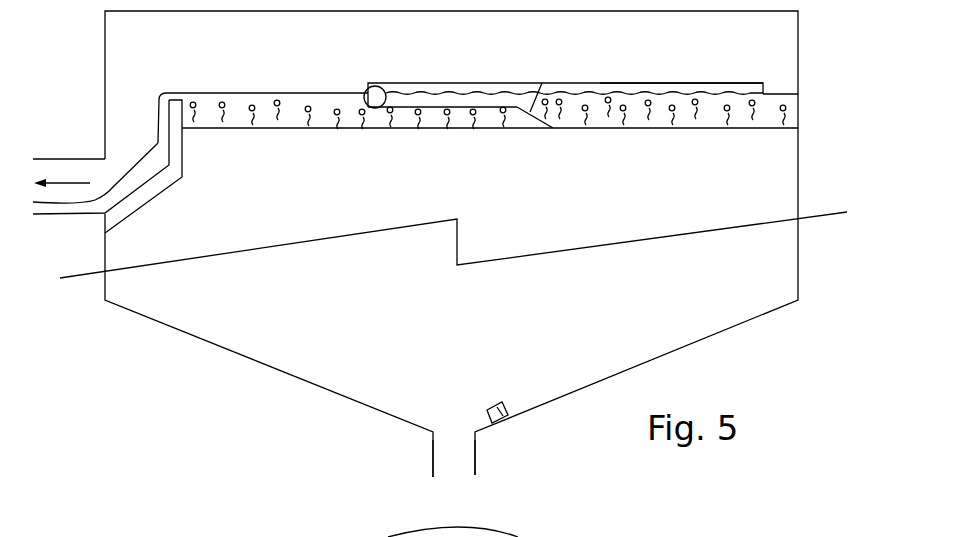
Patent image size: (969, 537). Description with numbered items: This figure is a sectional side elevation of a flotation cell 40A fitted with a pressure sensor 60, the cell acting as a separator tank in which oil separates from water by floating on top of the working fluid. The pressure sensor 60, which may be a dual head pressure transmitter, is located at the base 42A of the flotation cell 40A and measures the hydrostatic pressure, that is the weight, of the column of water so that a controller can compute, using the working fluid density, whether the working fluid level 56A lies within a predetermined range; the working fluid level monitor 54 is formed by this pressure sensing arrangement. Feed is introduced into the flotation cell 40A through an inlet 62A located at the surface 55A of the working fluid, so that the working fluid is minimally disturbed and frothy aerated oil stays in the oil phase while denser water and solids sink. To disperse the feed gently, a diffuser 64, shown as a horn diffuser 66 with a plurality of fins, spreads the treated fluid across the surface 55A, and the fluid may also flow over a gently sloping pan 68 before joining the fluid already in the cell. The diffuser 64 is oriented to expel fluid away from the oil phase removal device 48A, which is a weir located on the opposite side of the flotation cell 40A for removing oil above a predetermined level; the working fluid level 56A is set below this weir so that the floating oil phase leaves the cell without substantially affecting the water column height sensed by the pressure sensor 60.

The flotation cell 40A is at (798, 178).
The base 42A is at (497, 470).
The oil phase removal device 48A is at (182, 150).
The surface 55A is at (290, 127).
The working fluid level 56A is at (522, 128).
The inlet 62A is at (600, 84).
The diffuser 64 is at (681, 62).
The horn diffuser 66 is at (667, 83).
The gently sloping pan 68 is at (542, 83).
The sensor 54 is at (557, 438).
The pressure sensor 60 is at (503, 403).